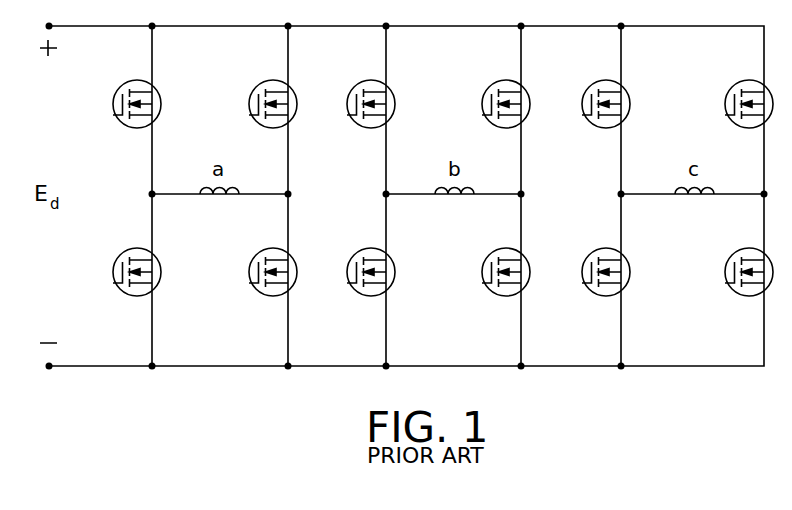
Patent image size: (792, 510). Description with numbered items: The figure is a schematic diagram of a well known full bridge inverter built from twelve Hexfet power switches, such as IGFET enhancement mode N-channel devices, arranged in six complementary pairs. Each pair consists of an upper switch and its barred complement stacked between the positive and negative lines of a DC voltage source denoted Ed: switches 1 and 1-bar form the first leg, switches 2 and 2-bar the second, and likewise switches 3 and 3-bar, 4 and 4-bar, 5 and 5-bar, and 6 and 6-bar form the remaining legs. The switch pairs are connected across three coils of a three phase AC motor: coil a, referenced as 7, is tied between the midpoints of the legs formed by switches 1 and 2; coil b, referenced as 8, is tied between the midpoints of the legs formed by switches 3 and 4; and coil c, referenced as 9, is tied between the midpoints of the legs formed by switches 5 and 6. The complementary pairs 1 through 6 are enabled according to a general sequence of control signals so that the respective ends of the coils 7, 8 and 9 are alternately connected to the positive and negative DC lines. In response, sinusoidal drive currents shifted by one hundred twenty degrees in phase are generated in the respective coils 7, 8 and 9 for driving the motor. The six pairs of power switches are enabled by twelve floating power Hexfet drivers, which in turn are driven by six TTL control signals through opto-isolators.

The complementary power switch pair 1 is at (94, 258).
The complementary power switch pair 2 is at (231, 258).
The complementary power switch pair 3 is at (329, 258).
The complementary power switch pair 4 is at (464, 258).
The complementary power switch pair 5 is at (563, 258).
The complementary power switch pair 6 is at (706, 258).
The coil 7 is at (228, 200).
The coil 8 is at (455, 199).
The coil 9 is at (700, 195).